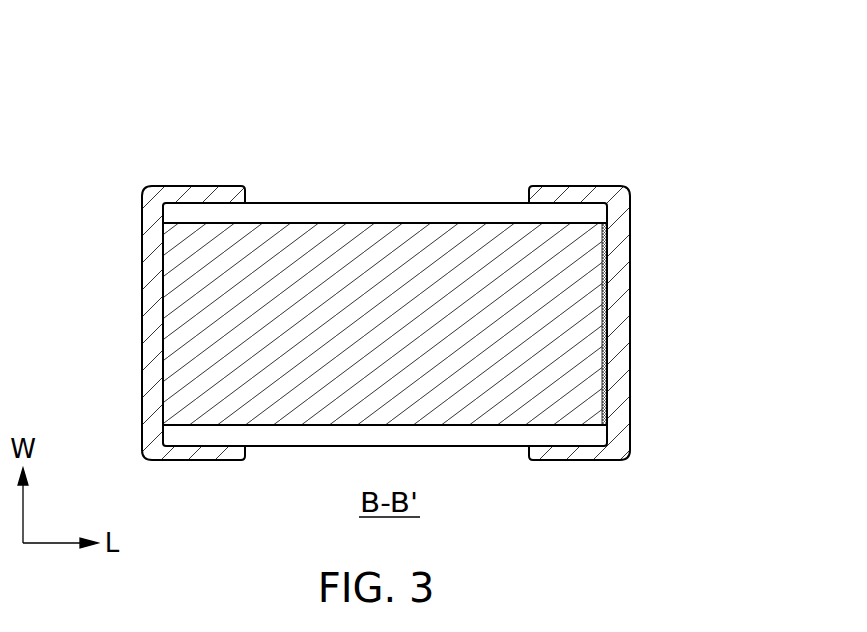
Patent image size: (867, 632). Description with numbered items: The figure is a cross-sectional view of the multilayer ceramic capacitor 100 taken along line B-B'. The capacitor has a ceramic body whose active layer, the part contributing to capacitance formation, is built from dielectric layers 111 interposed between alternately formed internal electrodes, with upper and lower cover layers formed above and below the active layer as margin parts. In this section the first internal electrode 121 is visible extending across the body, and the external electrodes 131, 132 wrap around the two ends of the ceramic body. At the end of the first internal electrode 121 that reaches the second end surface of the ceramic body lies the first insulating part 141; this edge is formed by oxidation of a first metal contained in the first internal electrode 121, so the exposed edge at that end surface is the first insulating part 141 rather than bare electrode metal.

The multilayer ceramic capacitor 100 is at (253, 43).
The dielectric layers 111 is at (322, 203).
The first internal electrode 121 is at (428, 242).
The external electrode 131 is at (208, 192).
The external electrode 132 is at (602, 188).
The first insulating part 141 is at (605, 288).